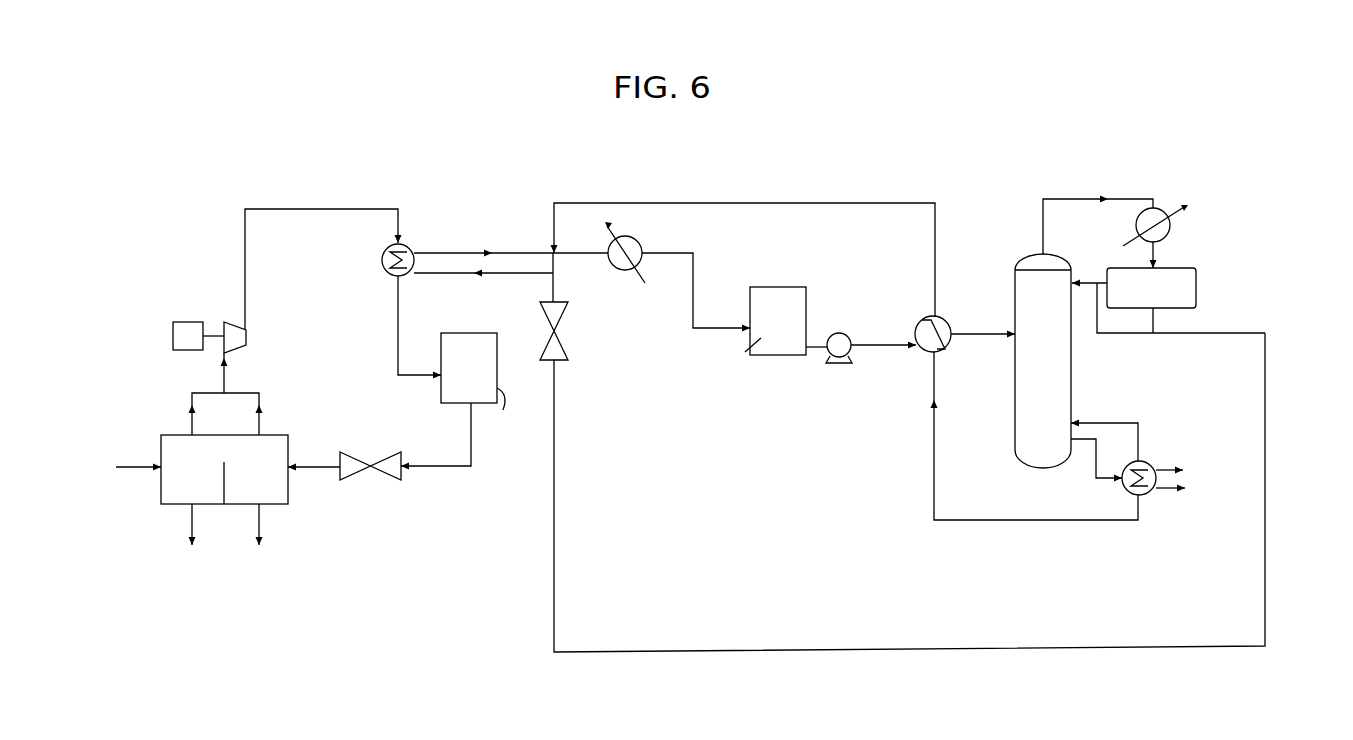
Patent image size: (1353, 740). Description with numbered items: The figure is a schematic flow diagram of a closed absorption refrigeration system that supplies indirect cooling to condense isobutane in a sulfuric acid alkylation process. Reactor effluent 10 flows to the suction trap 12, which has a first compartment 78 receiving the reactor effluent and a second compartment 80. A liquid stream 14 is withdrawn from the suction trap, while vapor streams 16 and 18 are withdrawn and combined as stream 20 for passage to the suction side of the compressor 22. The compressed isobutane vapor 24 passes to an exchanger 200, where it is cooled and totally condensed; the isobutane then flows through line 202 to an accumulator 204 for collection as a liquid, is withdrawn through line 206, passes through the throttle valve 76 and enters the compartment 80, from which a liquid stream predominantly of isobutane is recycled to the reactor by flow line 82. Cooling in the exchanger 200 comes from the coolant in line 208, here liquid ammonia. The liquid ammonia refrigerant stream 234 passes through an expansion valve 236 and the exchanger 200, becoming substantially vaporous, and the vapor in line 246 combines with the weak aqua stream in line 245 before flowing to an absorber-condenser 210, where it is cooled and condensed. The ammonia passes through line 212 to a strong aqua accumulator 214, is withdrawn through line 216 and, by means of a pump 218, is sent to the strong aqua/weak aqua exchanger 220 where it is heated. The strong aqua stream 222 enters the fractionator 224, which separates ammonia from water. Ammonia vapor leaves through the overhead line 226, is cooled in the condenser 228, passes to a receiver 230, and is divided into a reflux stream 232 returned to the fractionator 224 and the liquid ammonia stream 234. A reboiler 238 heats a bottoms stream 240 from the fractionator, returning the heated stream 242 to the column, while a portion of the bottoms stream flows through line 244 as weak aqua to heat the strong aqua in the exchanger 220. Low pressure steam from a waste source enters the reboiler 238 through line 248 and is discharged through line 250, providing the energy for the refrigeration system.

The reactor effluent 10 is at (136, 470).
The suction trap 12 is at (156, 443).
The liquid stream 14 is at (190, 526).
The vapor stream 16 is at (190, 405).
The line 18 is at (261, 405).
The stream 20 is at (226, 378).
The compressor 22 is at (248, 340).
The compressed isobutane vapor 24 is at (324, 212).
The throttle valve 76 is at (381, 461).
The first compartment 78 is at (202, 483).
The second compartment 80 is at (253, 481).
The flow line 82 is at (261, 526).
The exchanger 200 is at (385, 265).
The line 202 is at (397, 322).
The accumulator 204 is at (484, 332).
The line 206 is at (430, 467).
The line 208 is at (556, 270).
The absorber-condenser 210 is at (642, 243).
The line 212 is at (696, 293).
The accumulator 214 is at (807, 313).
The line 216 is at (821, 354).
The pump 218 is at (851, 352).
The strong aqua/weak aqua exchanger 220 is at (919, 326).
The strong aqua stream 222 is at (982, 328).
The fractionator 224 is at (1014, 413).
The overhead line 226 is at (1085, 197).
The condenser 228 is at (1171, 230).
The receiver 230 is at (1196, 271).
The reflux stream 232 is at (1137, 336).
The liquid ammonia refrigerant stream 234 is at (660, 652).
The expansion valve 236 is at (556, 362).
The reboiler 238 is at (1152, 467).
The bottoms stream 240 is at (1096, 468).
The heated stream 242 is at (1128, 406).
The line 244 is at (960, 521).
The line 245 is at (716, 205).
The line 246 is at (461, 251).
The line 248 is at (1184, 471).
The line 250 is at (1167, 492).